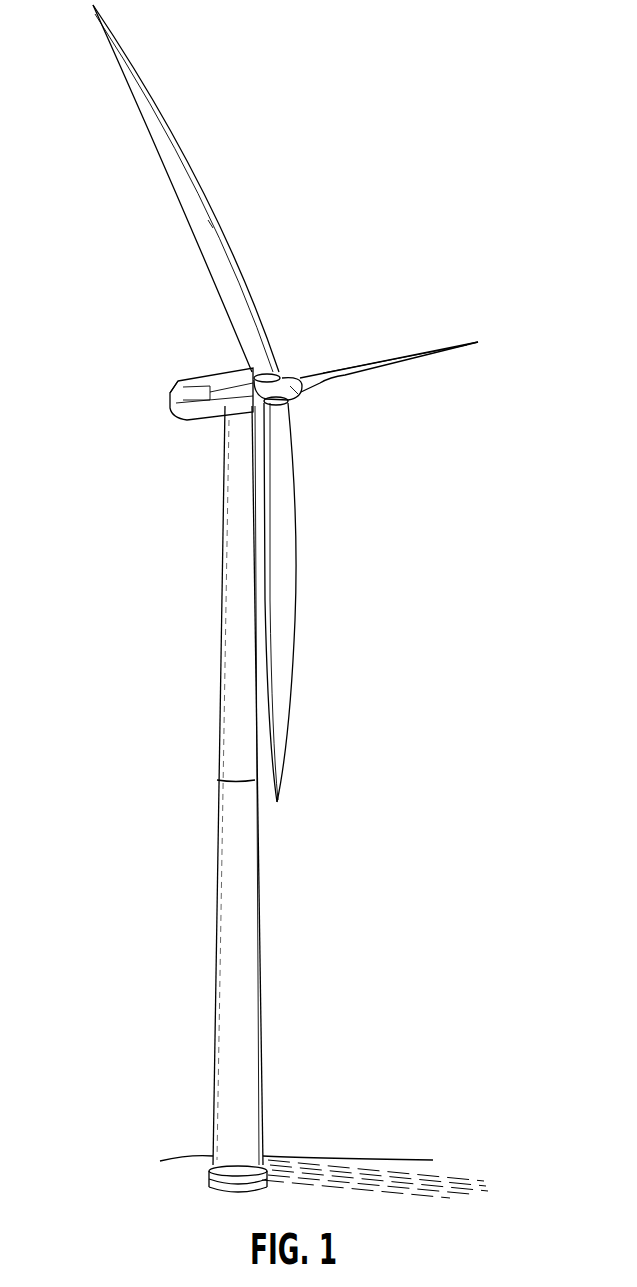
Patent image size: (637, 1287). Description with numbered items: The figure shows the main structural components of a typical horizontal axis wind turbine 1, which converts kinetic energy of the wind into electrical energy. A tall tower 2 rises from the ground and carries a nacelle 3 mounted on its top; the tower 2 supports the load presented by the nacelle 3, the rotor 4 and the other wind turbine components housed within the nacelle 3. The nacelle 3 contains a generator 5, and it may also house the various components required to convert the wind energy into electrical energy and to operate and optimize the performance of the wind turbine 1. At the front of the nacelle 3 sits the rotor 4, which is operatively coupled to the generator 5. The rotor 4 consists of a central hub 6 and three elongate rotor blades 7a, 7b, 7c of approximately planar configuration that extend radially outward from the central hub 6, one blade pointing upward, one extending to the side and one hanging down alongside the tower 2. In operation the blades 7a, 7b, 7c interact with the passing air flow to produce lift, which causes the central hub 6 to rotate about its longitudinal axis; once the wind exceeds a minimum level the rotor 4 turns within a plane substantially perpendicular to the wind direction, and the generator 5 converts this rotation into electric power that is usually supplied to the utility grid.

The wind turbine 1 is at (412, 159).
The tower 2 is at (218, 684).
The nacelle 3 is at (197, 377).
The rotor 4 is at (290, 367).
The generator 5 is at (173, 392).
The central hub 6 is at (298, 392).
The rotor blade 7a is at (135, 88).
The rotor blade 7b is at (403, 362).
The rotor blade 7c is at (286, 708).